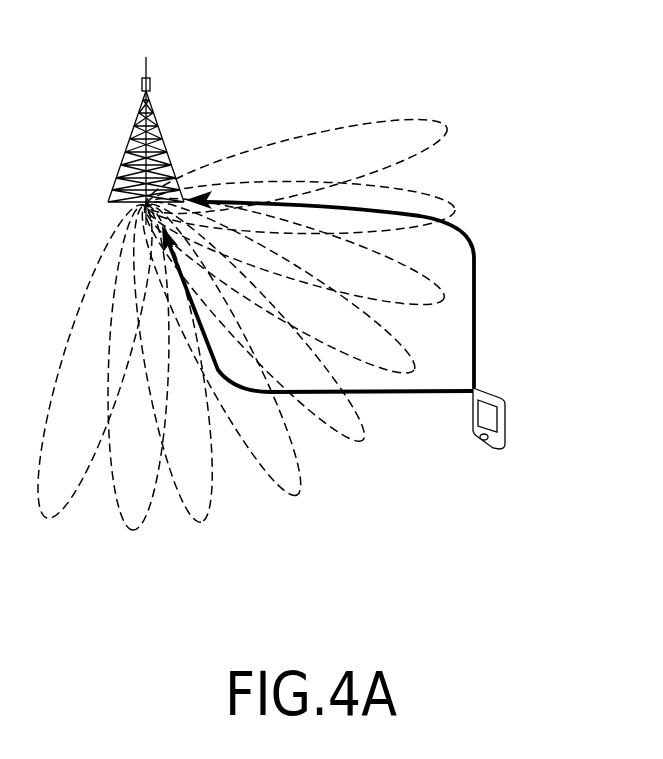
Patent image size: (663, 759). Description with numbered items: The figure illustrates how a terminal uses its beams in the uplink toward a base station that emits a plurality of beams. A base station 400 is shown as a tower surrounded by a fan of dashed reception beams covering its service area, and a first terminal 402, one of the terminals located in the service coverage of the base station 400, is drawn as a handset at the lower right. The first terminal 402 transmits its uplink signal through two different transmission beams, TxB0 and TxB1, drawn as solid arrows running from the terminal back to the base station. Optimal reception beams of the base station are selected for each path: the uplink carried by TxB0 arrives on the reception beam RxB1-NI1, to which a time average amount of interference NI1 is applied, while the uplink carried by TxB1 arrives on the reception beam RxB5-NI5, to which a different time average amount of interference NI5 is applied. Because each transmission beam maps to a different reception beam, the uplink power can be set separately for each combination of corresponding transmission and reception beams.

The base station 400 is at (155, 116).
The first terminal 402 is at (506, 420).
The transmission beam TxB0 is at (363, 289).
The transmission beam TxB1 is at (317, 324).
The reception beam with time average amount of interference RxB1-NI1 is at (301, 203).
The reception beam with time average amount of interference RxB5-NI5 is at (221, 350).